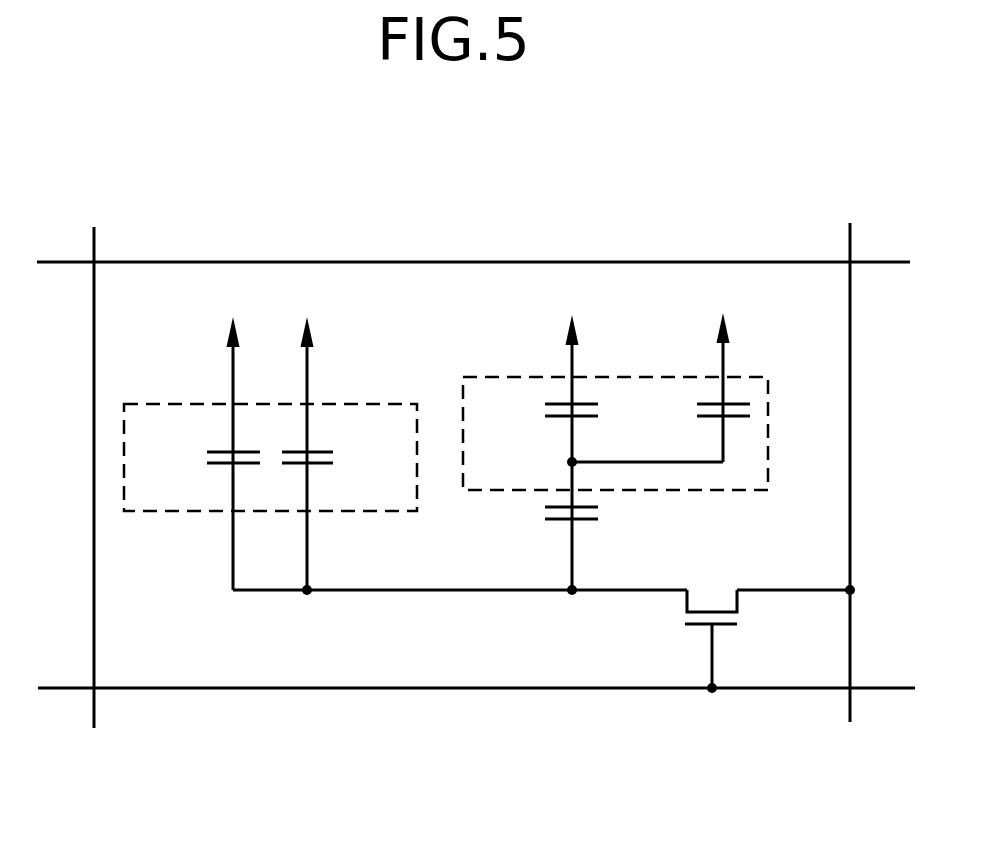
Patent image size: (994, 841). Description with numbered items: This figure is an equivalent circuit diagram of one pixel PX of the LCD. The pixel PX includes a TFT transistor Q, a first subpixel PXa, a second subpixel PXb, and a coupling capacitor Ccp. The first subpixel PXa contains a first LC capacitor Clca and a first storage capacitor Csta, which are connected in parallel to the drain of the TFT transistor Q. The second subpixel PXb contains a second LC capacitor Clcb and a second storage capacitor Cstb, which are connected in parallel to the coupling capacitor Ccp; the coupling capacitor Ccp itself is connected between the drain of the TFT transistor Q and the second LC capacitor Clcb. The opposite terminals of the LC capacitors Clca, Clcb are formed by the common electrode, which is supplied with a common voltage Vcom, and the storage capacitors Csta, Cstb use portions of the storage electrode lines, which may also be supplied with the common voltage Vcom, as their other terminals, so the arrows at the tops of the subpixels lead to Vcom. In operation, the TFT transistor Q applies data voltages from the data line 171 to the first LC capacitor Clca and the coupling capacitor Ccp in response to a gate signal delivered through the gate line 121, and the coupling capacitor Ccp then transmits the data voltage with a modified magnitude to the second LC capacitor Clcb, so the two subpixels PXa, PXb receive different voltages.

The data line 171 is at (850, 448).
The gate line 121 is at (790, 688).
The TFT transistor Q is at (711, 624).
The pixel PX is at (482, 203).
The first subpixel PXa is at (368, 404).
The second subpixel PXb is at (487, 377).
The common voltage Vcom is at (460, 316).
The first LC capacitor Clca is at (198, 467).
The first storage capacitor Csta is at (343, 467).
The second LC capacitor Clcb is at (537, 466).
The second storage capacitor Cstb is at (661, 402).
The coupling capacitor Ccp is at (542, 511).